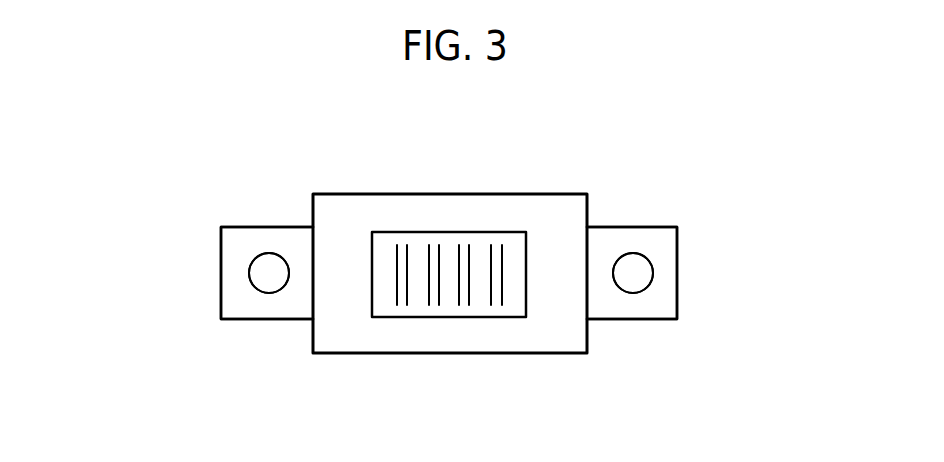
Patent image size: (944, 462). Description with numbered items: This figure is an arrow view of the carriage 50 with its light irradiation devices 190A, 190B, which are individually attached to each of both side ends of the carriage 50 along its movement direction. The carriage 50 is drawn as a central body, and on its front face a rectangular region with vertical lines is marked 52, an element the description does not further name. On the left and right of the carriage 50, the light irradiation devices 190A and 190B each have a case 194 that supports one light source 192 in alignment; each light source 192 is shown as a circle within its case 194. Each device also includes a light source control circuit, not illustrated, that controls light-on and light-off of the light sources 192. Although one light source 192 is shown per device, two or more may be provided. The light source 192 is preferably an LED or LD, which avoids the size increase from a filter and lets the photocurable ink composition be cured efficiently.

The carriage 50 is at (530, 342).
The vent / grille region 52 is at (463, 323).
The light irradiation device 190A is at (258, 218).
The light irradiation device 190B is at (638, 218).
The light source 192 is at (272, 280).
The case 194 is at (238, 312).